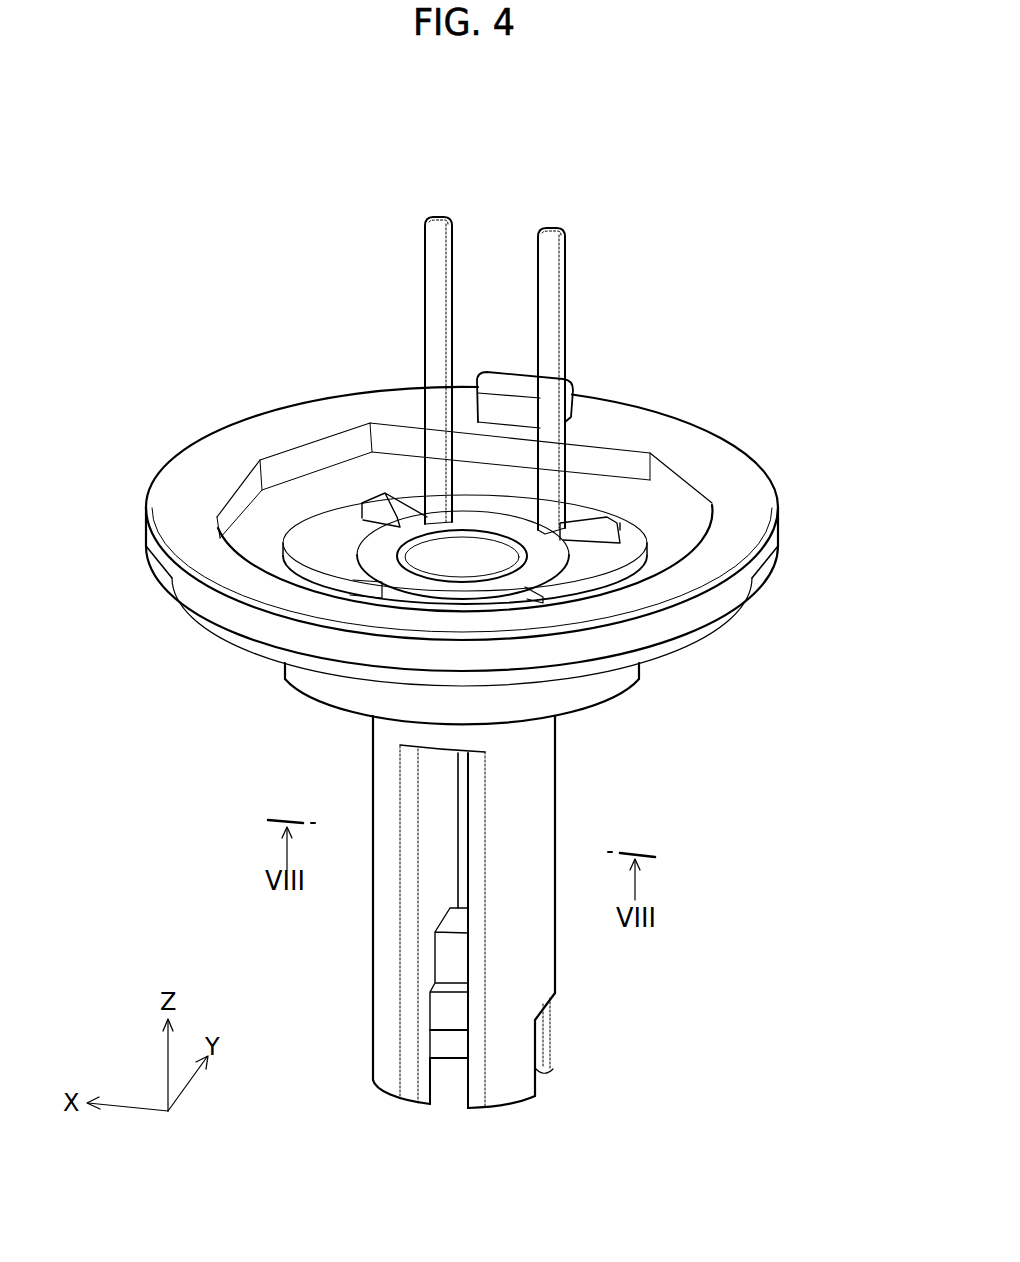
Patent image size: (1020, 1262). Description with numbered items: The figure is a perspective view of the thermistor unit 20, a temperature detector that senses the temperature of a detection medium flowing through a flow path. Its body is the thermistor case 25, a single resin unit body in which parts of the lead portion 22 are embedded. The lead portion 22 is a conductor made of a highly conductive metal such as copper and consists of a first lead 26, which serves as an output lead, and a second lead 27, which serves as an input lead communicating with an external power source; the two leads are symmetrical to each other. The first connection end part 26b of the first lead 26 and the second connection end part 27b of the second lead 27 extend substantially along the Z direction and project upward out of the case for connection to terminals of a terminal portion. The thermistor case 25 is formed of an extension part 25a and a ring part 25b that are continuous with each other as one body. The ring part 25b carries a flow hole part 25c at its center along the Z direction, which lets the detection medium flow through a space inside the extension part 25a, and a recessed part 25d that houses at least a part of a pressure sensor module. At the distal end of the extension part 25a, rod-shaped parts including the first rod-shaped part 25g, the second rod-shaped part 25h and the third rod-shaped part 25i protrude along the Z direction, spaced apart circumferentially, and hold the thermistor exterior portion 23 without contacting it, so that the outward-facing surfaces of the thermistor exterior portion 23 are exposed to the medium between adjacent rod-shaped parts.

The thermistor unit 20 is at (230, 296).
The lead portion 22 is at (687, 262).
The first lead 26 is at (453, 291).
The first connection end part 26b is at (439, 216).
The second lead 27 is at (575, 341).
The second connection end part 27b is at (553, 228).
The thermistor case 25 is at (808, 676).
The extension part 25a is at (540, 790).
The ring part 25b is at (650, 627).
The flow hole part 25c is at (427, 562).
The recessed part 25d is at (663, 517).
The first rod-shaped part 25g is at (551, 1073).
The second rod-shaped part 25h is at (513, 1108).
The third rod-shaped part 25i is at (393, 1097).
The thermistor exterior portion 23 is at (448, 1050).